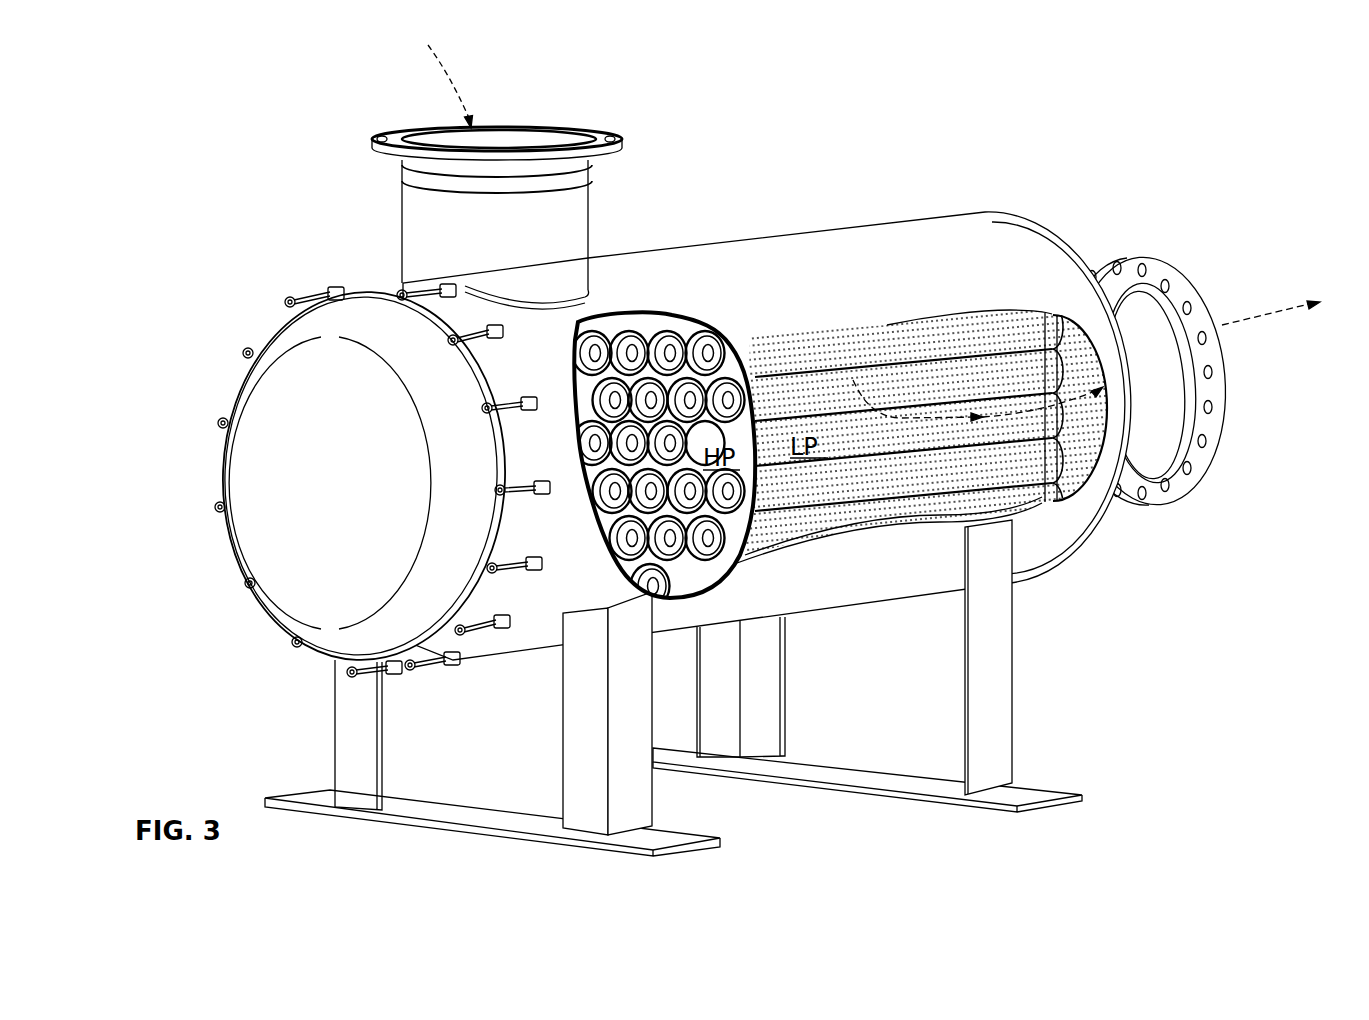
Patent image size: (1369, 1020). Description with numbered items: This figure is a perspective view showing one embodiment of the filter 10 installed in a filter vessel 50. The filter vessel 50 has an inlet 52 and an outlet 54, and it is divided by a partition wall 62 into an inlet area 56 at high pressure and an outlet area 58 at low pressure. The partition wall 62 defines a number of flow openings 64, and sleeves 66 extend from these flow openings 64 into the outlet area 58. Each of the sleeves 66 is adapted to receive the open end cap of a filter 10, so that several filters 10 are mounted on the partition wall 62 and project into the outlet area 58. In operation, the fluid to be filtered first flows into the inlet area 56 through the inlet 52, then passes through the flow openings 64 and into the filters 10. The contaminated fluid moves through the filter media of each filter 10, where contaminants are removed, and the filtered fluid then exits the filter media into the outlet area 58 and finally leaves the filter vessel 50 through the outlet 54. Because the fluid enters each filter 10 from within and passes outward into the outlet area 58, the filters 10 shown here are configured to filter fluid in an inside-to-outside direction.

The filter vessel 50 is at (218, 115).
The inlet 52 is at (372, 130).
The outlet 54 is at (1171, 267).
The inlet area 56 is at (648, 583).
The outlet area 58 is at (950, 468).
The partition wall 62 is at (677, 330).
The flow openings 64 is at (693, 570).
The sleeves 66 is at (772, 343).
The filter 10 is at (648, 326).